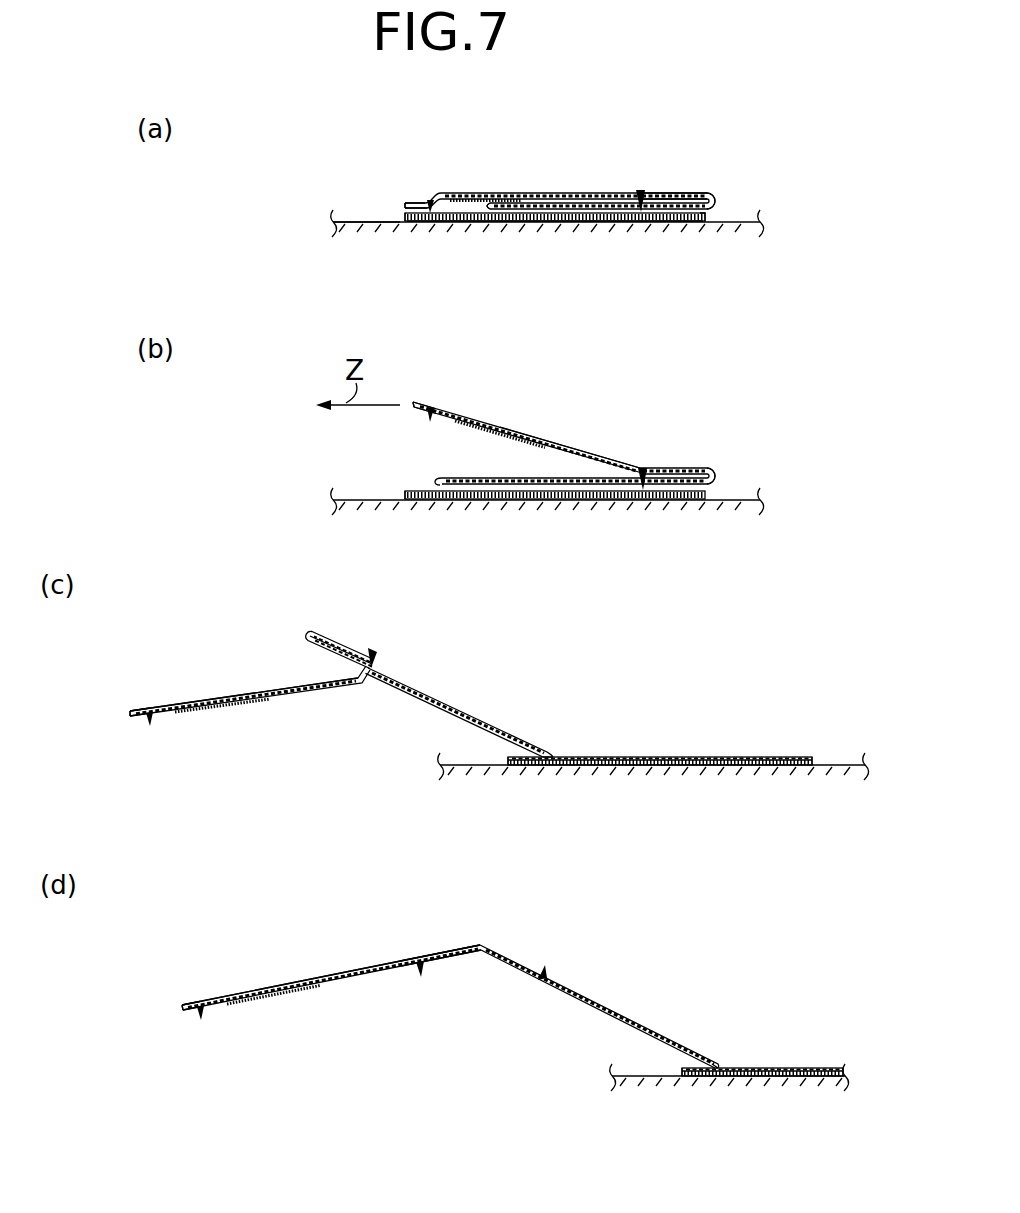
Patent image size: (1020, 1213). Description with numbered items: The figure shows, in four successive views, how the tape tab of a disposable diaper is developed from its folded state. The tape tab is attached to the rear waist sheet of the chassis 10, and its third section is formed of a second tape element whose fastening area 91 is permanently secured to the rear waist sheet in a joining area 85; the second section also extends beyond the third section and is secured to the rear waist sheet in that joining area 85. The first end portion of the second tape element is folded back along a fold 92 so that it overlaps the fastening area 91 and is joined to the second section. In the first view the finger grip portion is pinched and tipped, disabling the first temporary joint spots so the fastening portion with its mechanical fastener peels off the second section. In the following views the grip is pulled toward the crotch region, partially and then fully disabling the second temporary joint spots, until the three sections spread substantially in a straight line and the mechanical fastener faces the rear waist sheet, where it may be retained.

The chassis 10 is at (355, 205).
The joining area 85 is at (517, 224).
The fastening area 91 is at (845, 1068).
The fold 92 is at (630, 757).